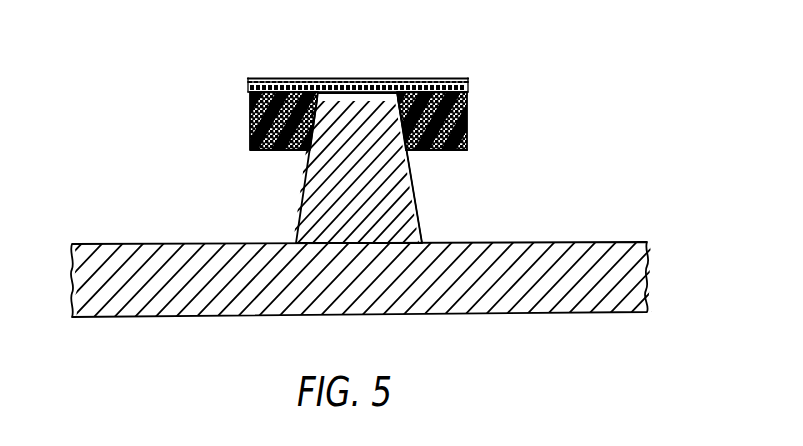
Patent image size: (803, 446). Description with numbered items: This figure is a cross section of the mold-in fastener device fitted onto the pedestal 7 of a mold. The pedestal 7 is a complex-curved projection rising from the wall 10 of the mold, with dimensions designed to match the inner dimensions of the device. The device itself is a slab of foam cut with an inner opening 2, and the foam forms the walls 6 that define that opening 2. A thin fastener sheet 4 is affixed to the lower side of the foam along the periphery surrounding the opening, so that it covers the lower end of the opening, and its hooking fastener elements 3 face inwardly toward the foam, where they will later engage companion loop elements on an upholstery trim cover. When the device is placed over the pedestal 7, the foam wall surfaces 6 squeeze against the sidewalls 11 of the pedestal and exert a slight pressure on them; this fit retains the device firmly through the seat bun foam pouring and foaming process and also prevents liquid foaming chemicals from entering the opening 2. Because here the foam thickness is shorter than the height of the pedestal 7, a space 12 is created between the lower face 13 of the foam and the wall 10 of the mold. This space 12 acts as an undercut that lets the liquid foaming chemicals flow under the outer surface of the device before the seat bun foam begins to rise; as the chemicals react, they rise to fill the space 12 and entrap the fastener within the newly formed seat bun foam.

The opening 2 is at (309, 177).
The fastener elements 3 is at (303, 78).
The fastener sheet 4 is at (413, 78).
The walls 6 is at (469, 119).
The pedestal 7 is at (322, 200).
The wall of the mold 10 is at (586, 238).
The sidewalls of the pedestal 11 is at (349, 104).
The space 12 is at (467, 152).
The lower face of the foam 13 is at (433, 154).